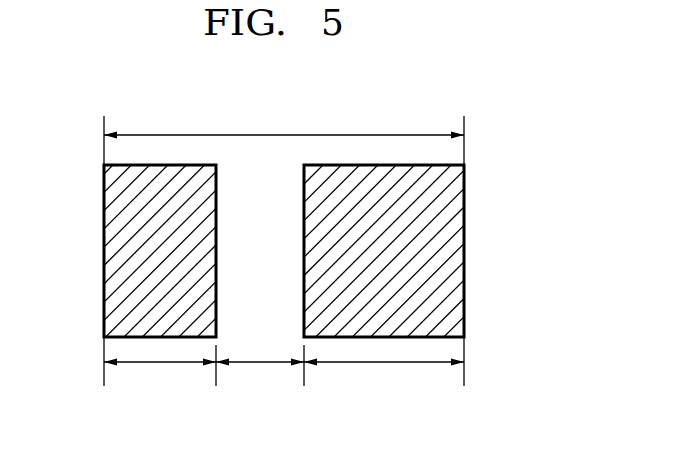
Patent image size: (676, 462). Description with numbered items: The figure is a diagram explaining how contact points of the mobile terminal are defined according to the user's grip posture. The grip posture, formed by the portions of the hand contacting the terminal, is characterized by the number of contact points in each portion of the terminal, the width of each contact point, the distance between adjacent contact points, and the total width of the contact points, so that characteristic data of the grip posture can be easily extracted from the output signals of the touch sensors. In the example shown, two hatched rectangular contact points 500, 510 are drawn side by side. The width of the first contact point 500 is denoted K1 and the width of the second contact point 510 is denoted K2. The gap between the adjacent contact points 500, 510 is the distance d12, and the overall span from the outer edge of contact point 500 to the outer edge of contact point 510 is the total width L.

The contact point 500 is at (122, 253).
The contact point 510 is at (444, 252).
The total width of the contact points L is at (284, 120).
The width of contact point K1 is at (160, 379).
The width of contact point K2 is at (384, 379).
The distance between adjacent contact points d12 is at (260, 379).